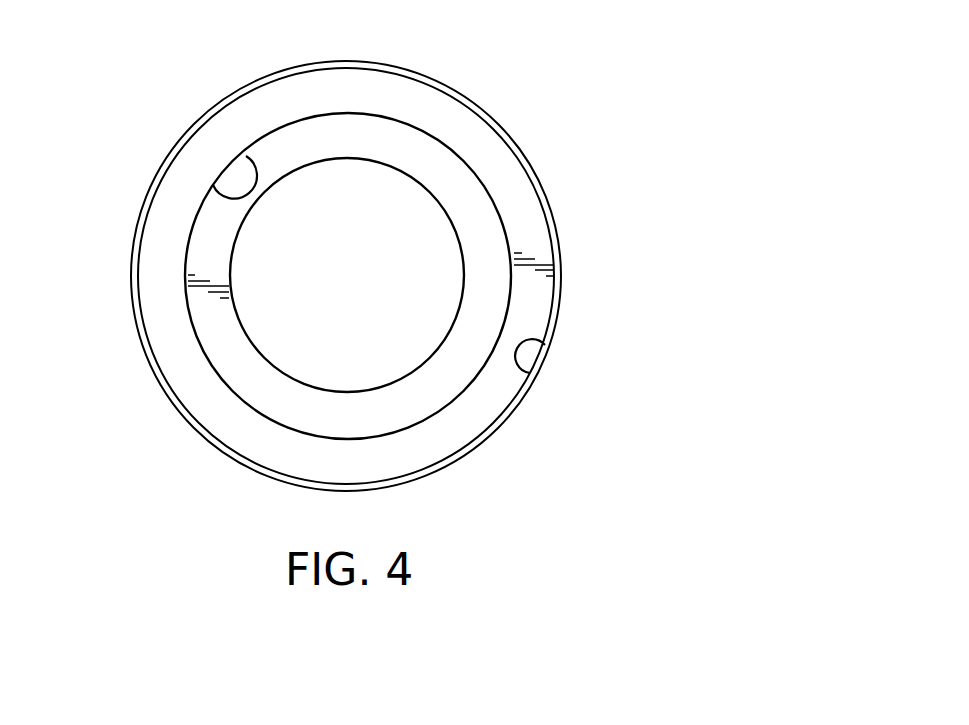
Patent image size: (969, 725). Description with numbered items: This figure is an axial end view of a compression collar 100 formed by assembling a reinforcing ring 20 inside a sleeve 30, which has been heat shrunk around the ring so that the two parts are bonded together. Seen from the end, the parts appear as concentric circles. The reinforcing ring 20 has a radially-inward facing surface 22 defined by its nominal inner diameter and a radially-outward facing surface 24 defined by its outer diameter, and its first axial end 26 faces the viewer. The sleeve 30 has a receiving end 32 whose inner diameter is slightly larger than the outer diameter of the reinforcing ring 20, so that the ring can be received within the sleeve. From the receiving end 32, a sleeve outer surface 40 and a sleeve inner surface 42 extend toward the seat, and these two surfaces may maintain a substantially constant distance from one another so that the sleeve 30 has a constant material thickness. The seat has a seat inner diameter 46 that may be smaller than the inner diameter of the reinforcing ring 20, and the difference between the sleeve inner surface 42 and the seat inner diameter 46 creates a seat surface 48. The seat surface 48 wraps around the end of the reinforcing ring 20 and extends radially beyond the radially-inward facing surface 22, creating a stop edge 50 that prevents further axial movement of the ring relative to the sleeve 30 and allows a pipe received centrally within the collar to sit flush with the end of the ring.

The compression collar 100 is at (503, 69).
The reinforcing ring 20 is at (223, 421).
The radially-inward facing surface 22 is at (215, 183).
The radially-outward facing surface 24 is at (250, 90).
The first axial end 26 is at (359, 101).
The sleeve 30 is at (502, 463).
The receiving end 32 is at (148, 352).
The sleeve outer surface 40 is at (553, 209).
The sleeve inner surface 42 is at (530, 371).
The seat inner diameter 46 is at (242, 327).
The seat surface 48 is at (368, 424).
The stop edge 50 is at (452, 196).